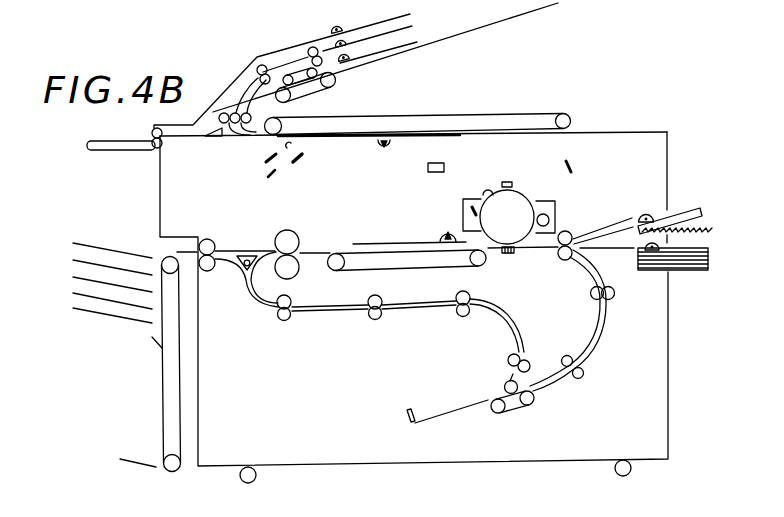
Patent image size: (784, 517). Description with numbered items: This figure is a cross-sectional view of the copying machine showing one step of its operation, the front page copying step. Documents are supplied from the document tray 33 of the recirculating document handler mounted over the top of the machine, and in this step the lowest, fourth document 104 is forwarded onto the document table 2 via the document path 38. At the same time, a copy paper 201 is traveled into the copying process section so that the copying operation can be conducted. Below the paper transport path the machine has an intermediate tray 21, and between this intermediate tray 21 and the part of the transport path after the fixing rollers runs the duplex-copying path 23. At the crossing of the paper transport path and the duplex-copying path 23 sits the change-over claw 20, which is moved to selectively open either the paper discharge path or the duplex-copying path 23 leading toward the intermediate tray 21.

The document table 2 is at (541, 140).
The change-over claw 20 is at (237, 269).
The intermediate tray 21 is at (449, 409).
The duplex-copying path 23 is at (332, 322).
The document tray 33 is at (521, 17).
The document path 38 is at (251, 140).
The fourth document 104 is at (374, 129).
The copy paper 201 is at (395, 241).